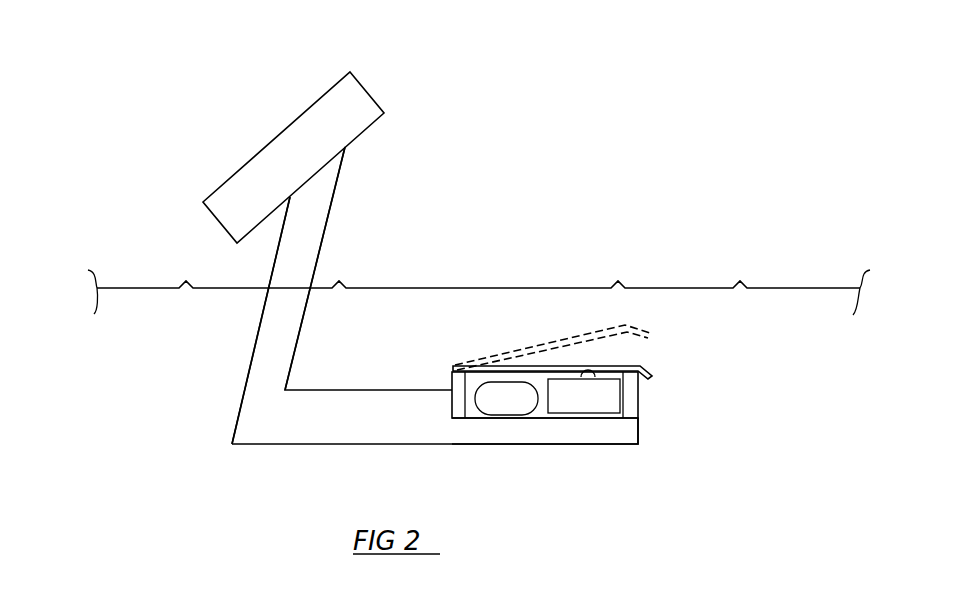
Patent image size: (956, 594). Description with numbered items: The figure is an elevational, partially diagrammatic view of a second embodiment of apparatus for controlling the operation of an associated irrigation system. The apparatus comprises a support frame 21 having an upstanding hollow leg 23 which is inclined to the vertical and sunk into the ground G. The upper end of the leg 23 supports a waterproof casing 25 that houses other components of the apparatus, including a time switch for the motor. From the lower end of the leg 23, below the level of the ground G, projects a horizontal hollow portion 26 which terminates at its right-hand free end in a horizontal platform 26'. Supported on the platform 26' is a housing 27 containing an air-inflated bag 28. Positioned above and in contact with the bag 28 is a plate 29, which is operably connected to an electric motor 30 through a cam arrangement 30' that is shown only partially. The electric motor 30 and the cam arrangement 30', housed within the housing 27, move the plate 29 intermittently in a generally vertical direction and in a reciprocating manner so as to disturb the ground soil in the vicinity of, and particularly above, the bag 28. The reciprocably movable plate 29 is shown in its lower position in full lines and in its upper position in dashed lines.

The support frame 21 is at (340, 240).
The upstanding hollow leg 23 is at (268, 350).
The waterproof casing 25 is at (322, 127).
The horizontal hollow portion 26 is at (435, 461).
The horizontal platform 26' is at (545, 461).
The housing 27 is at (630, 402).
The air-inflated bag 28 is at (488, 407).
The plate 29 is at (625, 323).
The electric motor 30 is at (584, 396).
The cam arrangement 30' is at (576, 301).
The ground G is at (775, 308).